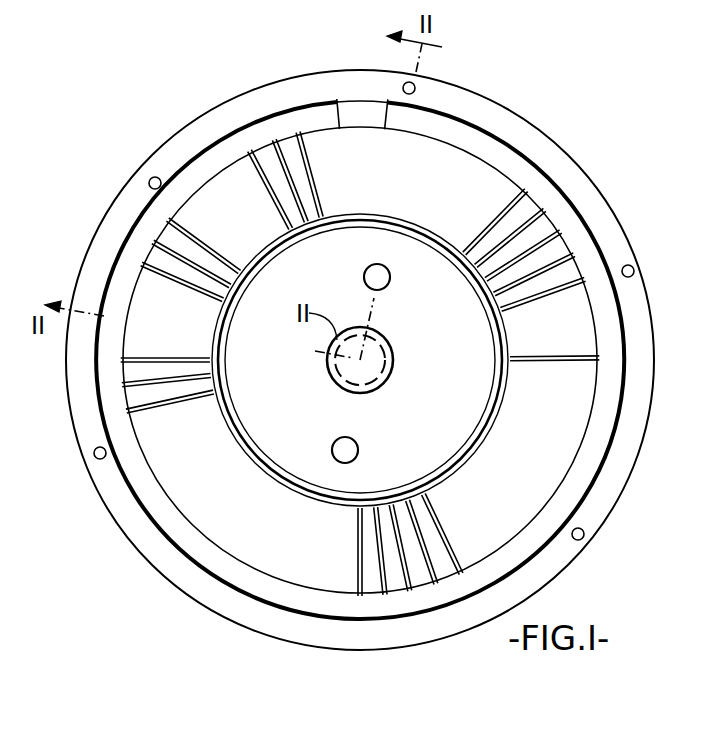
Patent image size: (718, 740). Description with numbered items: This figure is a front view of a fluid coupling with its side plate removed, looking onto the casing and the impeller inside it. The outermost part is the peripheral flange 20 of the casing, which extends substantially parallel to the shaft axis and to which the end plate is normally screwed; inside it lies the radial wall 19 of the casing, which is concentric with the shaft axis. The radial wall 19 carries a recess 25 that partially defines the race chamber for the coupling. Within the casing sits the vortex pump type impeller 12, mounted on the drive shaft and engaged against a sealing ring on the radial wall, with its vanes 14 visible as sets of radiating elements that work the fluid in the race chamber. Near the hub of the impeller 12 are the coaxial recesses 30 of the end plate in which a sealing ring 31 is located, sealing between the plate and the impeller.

The vortex pump type impeller 12 is at (590, 431).
The vanes of impeller 14 is at (210, 247).
The radial wall 19 is at (573, 225).
The peripheral flange 20 is at (522, 128).
The recess 25 is at (357, 110).
The coaxial recesses 30 is at (490, 436).
The sealing ring 31 is at (480, 453).